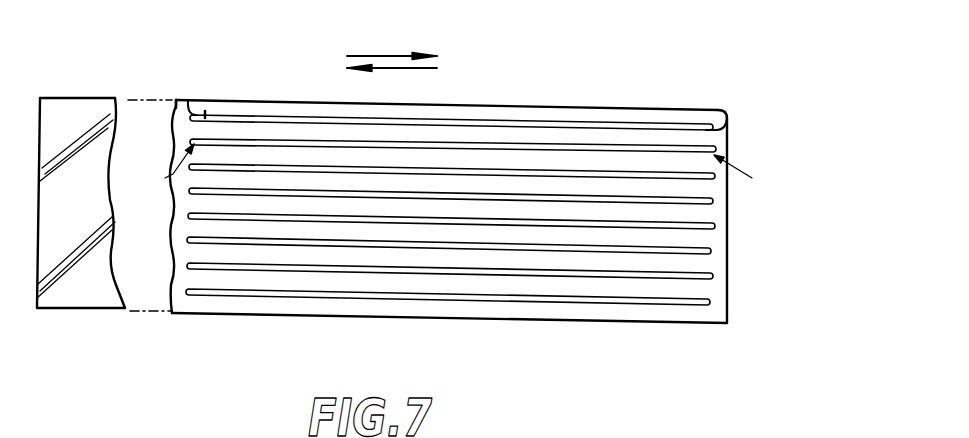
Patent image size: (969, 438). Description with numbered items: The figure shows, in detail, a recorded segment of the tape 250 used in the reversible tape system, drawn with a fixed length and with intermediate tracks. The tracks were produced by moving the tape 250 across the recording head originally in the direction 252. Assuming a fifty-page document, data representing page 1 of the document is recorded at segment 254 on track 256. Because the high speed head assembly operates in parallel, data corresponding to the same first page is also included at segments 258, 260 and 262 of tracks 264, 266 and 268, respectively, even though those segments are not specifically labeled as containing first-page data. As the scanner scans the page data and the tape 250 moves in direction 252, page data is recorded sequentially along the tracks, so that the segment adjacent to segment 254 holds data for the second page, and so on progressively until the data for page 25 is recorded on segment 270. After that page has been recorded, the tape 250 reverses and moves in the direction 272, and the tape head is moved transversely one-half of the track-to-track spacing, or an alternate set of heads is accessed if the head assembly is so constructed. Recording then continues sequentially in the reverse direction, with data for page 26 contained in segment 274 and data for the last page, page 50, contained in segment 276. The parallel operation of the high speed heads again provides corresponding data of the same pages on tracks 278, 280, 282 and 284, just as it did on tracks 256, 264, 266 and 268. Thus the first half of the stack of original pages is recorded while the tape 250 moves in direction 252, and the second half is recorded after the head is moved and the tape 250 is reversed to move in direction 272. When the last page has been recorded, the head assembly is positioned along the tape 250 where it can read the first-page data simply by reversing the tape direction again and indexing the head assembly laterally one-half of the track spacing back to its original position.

The first page 1 is at (705, 116).
The twenty-fifth page 25 is at (205, 112).
The twenty-sixth page 26 is at (154, 170).
The fiftieth page 50 is at (761, 174).
The tape 250 is at (81, 98).
The direction 252 is at (380, 55).
The segment 254 is at (728, 116).
The track 256 is at (541, 112).
The segment 258 is at (713, 178).
The segment 260 is at (712, 226).
The segment 262 is at (710, 276).
The track 264 is at (535, 170).
The track 266 is at (557, 218).
The track 268 is at (591, 282).
The segment 270 is at (183, 78).
The direction 272 is at (430, 70).
The segment 274 is at (172, 140).
The segment 276 is at (715, 150).
The track 278 is at (300, 144).
The track 280 is at (312, 198).
The track 282 is at (317, 252).
The track 284 is at (288, 300).